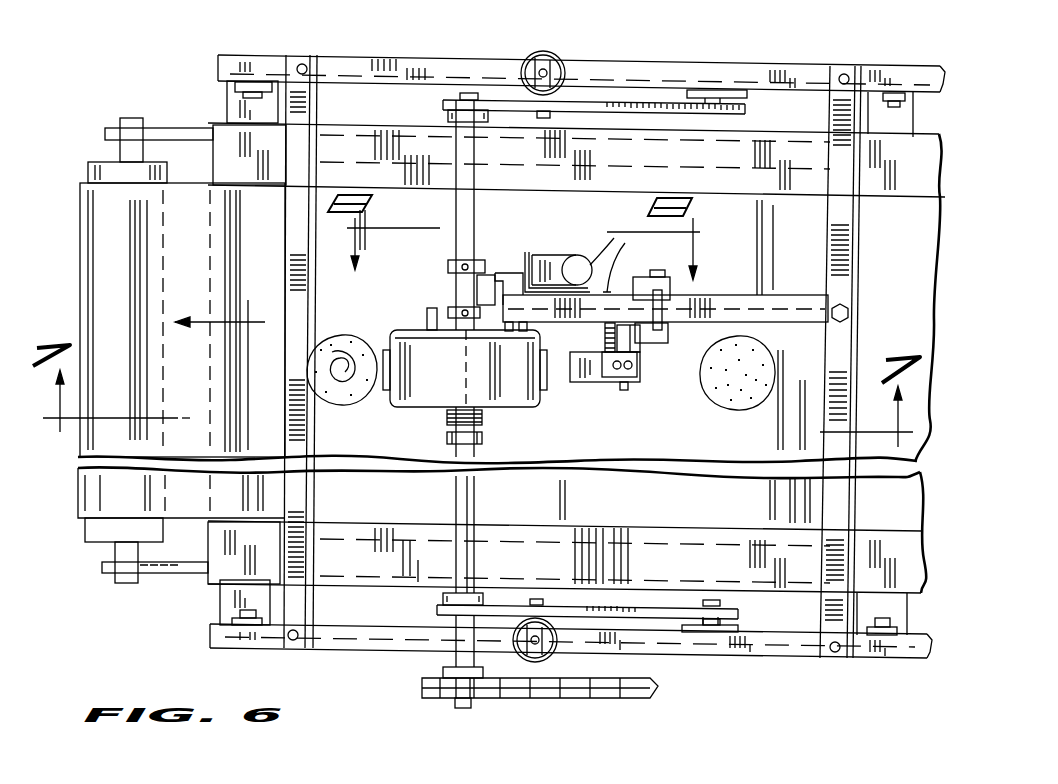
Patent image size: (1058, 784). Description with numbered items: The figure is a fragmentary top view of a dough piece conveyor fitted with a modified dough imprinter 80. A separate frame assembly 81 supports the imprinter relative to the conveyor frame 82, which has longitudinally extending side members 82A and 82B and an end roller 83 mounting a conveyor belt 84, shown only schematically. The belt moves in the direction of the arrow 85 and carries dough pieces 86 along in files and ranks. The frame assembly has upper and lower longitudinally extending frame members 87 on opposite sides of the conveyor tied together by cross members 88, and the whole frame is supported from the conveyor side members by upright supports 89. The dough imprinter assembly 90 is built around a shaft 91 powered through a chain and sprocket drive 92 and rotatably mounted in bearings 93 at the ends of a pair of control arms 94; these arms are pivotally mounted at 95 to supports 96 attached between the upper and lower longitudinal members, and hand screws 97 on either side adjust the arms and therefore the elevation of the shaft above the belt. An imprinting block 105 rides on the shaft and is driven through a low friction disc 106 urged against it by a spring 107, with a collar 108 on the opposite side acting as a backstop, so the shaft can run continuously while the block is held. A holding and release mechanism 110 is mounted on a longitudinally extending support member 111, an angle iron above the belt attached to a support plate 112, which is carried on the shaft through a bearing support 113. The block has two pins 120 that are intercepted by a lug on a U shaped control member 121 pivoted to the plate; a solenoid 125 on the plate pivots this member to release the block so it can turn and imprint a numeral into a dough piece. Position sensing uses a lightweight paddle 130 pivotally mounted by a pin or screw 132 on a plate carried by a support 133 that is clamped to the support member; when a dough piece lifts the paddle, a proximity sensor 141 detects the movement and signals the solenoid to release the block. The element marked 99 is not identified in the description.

The dough imprinter 80 is at (576, 382).
The frame assembly 81 is at (710, 660).
The conveyor frame 82 is at (185, 372).
The side member 82A is at (222, 160).
The side member 82B is at (208, 550).
The end roller 83 is at (87, 530).
The conveyor belt 84 is at (88, 210).
The arrow 85 is at (246, 318).
The dough pieces 86 is at (352, 405).
The longitudinal frame members 87 is at (385, 56).
The cross members 88 is at (845, 278).
The upright supports 89 is at (230, 100).
The dough imprinter assembly 90 is at (472, 354).
The shaft 91 is at (468, 510).
The chain and sprocket drive 92 is at (548, 698).
The bearings 93 is at (444, 118).
The control arms 94 is at (595, 116).
The pivot mounting 95 is at (725, 122).
The supports 96 is at (722, 90).
The hand screws 97 is at (528, 55).
The rack 99 is at (570, 100).
The imprinting block 105 is at (407, 392).
The friction disc 106 is at (447, 320).
The spring 107 is at (448, 428).
The collar 108 is at (450, 305).
The holding and release mechanism 110 is at (549, 244).
The support member 111 is at (788, 305).
The support plate 112 is at (617, 272).
The bearing support 113 is at (447, 265).
The pins 120 is at (428, 312).
The control member 121 is at (498, 262).
The solenoid 125 is at (580, 258).
The paddle 130 is at (590, 384).
The mounting pin or screw 132 is at (623, 390).
The support 133 is at (665, 308).
The proximity sensor 141 is at (600, 332).